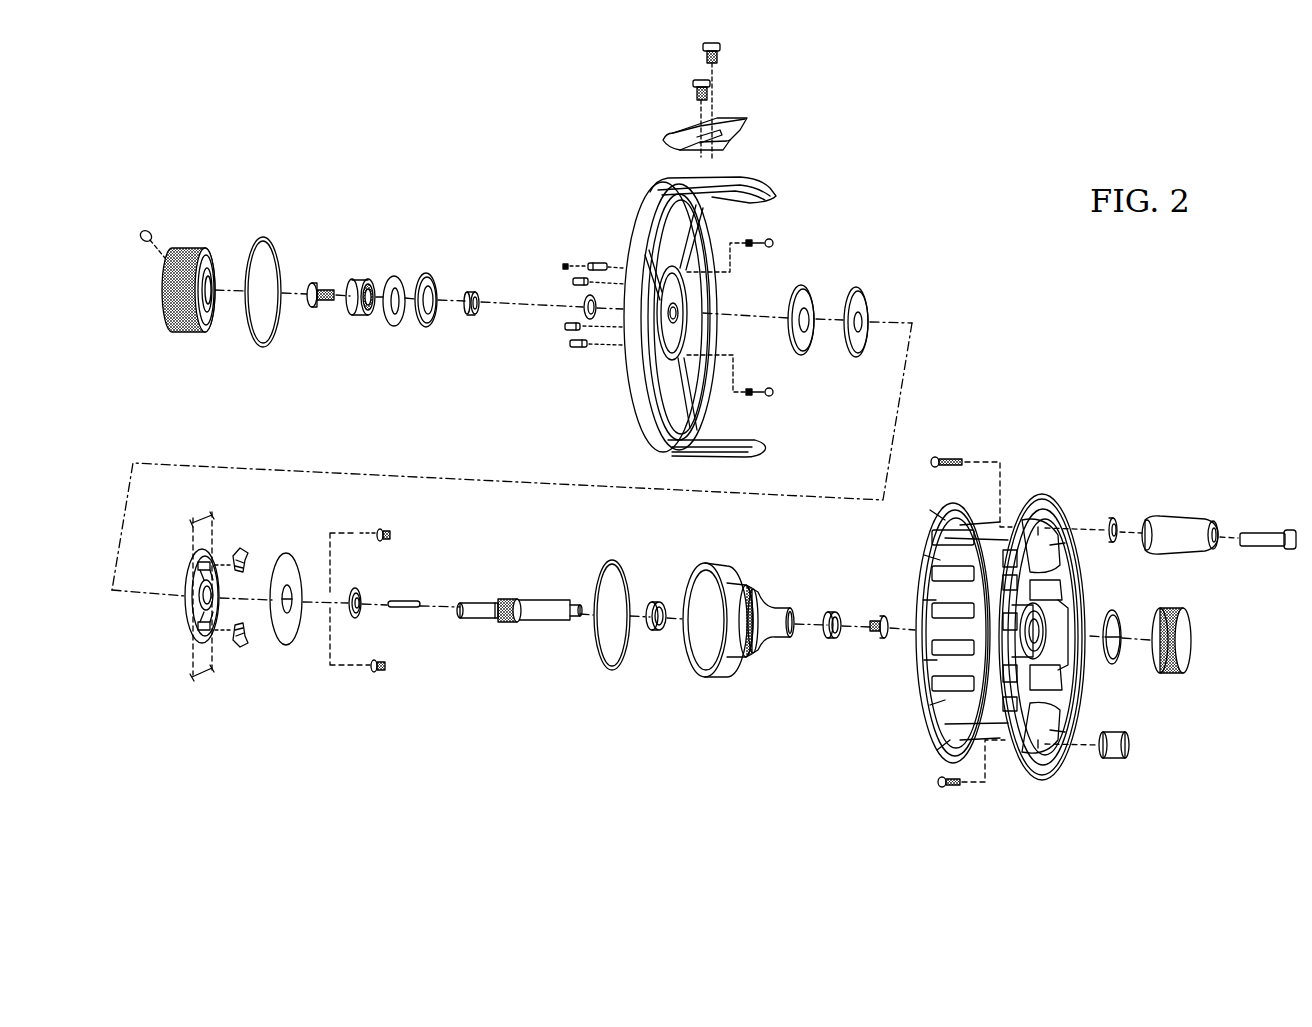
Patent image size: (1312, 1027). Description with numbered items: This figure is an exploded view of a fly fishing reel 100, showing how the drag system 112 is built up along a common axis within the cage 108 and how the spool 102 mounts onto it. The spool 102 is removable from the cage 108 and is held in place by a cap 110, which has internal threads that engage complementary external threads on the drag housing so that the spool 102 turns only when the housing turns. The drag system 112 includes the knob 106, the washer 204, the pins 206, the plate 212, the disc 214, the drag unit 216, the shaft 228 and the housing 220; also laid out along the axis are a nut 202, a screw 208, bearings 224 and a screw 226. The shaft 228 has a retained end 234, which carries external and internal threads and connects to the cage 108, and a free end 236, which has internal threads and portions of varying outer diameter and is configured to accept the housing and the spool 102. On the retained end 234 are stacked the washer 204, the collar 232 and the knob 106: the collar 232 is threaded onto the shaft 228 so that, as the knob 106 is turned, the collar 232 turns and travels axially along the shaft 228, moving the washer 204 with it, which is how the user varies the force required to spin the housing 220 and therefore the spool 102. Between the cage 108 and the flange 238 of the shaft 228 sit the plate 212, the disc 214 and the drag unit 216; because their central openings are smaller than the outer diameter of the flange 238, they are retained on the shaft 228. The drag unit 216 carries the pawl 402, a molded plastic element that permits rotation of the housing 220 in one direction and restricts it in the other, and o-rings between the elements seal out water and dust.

The fishing reel 100 is at (126, 190).
The spool 102 is at (1070, 783).
The knob 106 is at (191, 246).
The cage 108 is at (801, 96).
The cap 110 is at (1191, 645).
The drag system 112 is at (418, 752).
The nut 202 is at (473, 291).
The washer 204 is at (430, 274).
The pins 206 is at (571, 281).
The screw 208 is at (563, 262).
The plate 212 is at (803, 284).
The disc 214 is at (857, 287).
The drag unit 216 is at (217, 712).
The housing 220 is at (713, 562).
The bearing 224 is at (656, 601).
The screw 226 is at (881, 616).
The shaft 228 is at (545, 621).
The collar 232 is at (364, 279).
The retained end 234 is at (516, 616).
The free end 236 is at (516, 597).
The flange 238 is at (513, 598).
The pawl 402 is at (243, 548).